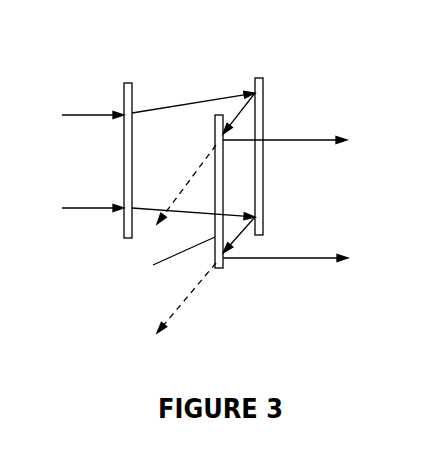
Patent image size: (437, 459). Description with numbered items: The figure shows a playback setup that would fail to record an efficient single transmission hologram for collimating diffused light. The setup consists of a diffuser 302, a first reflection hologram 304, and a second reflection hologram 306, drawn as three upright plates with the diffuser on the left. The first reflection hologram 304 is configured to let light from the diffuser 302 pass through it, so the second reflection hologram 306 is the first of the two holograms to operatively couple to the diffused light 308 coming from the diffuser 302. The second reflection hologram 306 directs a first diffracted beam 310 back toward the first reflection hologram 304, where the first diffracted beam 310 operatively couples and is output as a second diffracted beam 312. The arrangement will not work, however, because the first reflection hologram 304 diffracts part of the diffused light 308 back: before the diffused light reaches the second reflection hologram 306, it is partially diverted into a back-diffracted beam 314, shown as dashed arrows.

The diffuser 302 is at (126, 83).
The first reflection hologram 304 is at (221, 270).
The second reflection hologram 306 is at (263, 138).
The diffused light 308 is at (192, 102).
The first diffracted beam 310 is at (242, 115).
The second diffracted beam 312 is at (328, 145).
The back-diffracted beam 314 is at (178, 190).